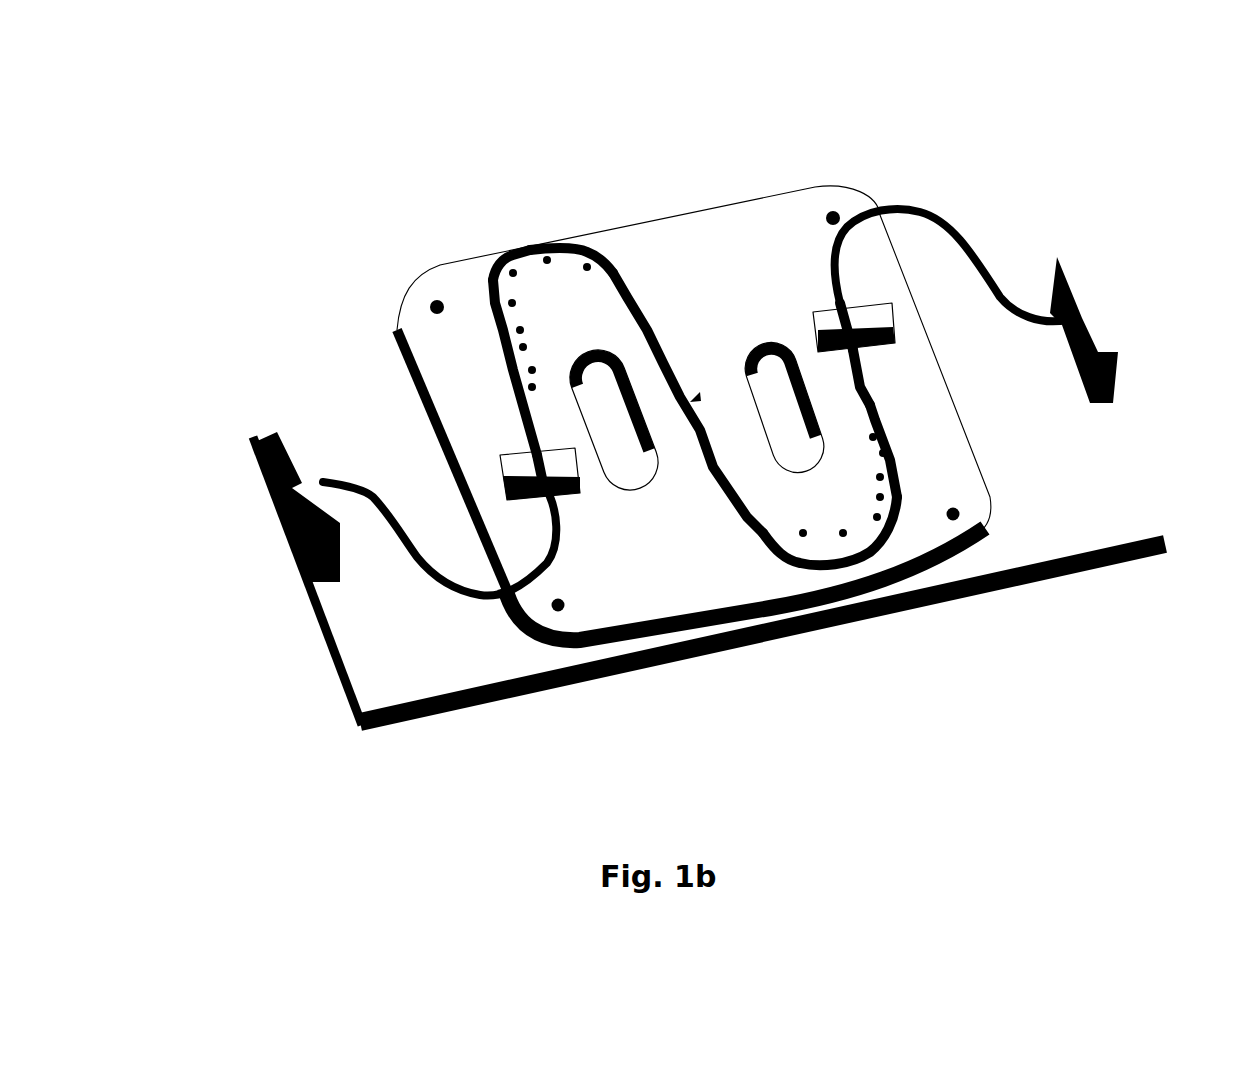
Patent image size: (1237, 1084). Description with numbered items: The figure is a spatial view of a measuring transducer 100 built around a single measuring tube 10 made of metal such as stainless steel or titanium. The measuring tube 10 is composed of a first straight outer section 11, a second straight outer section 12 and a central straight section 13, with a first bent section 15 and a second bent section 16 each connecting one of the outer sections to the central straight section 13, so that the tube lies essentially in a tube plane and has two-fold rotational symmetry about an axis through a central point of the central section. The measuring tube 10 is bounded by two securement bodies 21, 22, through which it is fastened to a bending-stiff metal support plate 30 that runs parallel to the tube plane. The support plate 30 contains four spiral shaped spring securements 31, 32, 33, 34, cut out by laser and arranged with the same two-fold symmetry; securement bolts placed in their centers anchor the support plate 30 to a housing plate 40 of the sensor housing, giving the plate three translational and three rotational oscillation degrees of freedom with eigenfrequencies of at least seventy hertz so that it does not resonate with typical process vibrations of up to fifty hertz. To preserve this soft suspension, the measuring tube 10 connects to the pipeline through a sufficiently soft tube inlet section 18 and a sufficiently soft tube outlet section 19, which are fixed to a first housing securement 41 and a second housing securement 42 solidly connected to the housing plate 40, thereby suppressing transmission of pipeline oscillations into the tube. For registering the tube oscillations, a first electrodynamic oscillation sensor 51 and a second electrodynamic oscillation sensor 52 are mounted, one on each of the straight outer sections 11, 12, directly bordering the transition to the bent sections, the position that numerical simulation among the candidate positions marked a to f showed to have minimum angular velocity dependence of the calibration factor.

The measuring transducer 100 is at (316, 178).
The measuring tube 10 is at (500, 380).
The first straight outer section 11 is at (868, 370).
The second straight outer section 12 is at (520, 428).
The central straight section 13 is at (683, 372).
The first bent section 15 is at (843, 560).
The second bent section 16 is at (560, 245).
The tube inlet section 18 is at (440, 597).
The tube outlet section 19 is at (965, 240).
The securement body 21 is at (828, 312).
The securement body 22 is at (500, 462).
The support plate 30 is at (457, 267).
The spiral shaped spring securement 31 is at (956, 520).
The spiral shaped spring securement 32 is at (836, 212).
The spiral shaped spring securement 33 is at (432, 306).
The spiral shaped spring securement 34 is at (557, 611).
The housing plate 40 is at (350, 697).
The first housing securement 41 is at (276, 434).
The second housing securement 42 is at (1082, 295).
The first electrodynamic oscillation sensor 51 is at (897, 482).
The second electrodynamic oscillation sensor 52 is at (490, 262).